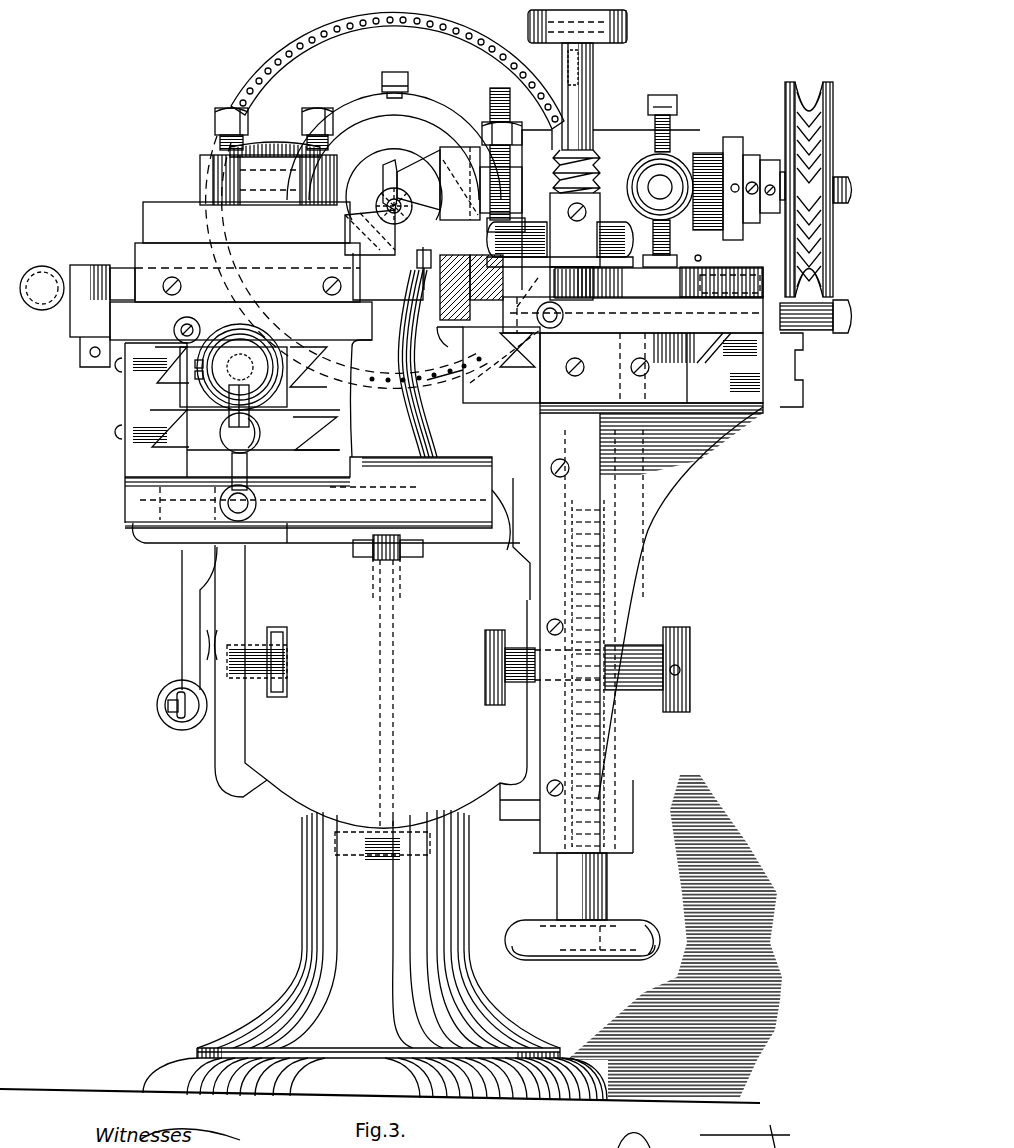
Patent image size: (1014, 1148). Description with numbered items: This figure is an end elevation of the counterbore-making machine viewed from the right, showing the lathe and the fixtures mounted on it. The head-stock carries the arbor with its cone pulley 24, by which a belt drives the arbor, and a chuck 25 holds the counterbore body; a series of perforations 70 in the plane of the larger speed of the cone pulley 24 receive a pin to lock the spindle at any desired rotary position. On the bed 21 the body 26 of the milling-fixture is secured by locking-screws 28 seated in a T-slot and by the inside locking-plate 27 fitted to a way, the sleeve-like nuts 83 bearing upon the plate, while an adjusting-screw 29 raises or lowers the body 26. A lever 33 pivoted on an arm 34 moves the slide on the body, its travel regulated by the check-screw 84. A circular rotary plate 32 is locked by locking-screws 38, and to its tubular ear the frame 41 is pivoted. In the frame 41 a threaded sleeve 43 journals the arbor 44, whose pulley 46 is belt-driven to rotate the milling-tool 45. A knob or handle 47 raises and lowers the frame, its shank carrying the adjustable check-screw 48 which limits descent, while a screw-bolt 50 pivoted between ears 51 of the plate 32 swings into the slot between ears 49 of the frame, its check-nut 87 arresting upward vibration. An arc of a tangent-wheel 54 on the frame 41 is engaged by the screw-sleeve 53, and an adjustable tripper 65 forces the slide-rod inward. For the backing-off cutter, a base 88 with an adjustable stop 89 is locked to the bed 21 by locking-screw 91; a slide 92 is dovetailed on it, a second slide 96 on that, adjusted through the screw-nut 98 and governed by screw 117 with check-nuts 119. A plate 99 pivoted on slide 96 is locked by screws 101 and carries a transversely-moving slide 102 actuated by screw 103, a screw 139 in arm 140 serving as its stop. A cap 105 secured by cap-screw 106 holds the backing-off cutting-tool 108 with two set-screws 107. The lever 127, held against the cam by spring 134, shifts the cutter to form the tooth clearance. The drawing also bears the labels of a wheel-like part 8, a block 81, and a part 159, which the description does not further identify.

The hand wheel 8 is at (234, 367).
The bed 21 is at (377, 686).
The cone pulley 24 is at (397, 70).
The chuck 25 is at (406, 206).
The body of the milling-fixture 26 is at (513, 478).
The inside locking-plate 27 is at (516, 539).
The locking-screws 28 is at (585, 669).
The adjusting-screw 29 is at (582, 906).
The circular rotary plate 32 is at (659, 283).
The lever 33 is at (525, 202).
The arm 34 is at (651, 368).
The locking-screws 38 is at (601, 277).
The frame 41 is at (611, 210).
The sleeve 43 is at (739, 186).
The arbor 44 is at (629, 187).
The milling-tool 45 is at (378, 185).
The pulley 46 is at (809, 188).
The knob or handle 47 is at (660, 210).
The adjustable check-screw 48 is at (676, 123).
The ears 49 is at (515, 190).
The screw-bolt 50 is at (498, 154).
The ears 51 is at (560, 244).
The screw-sleeve 53 is at (577, 80).
The arc of a tangent-wheel 54 is at (588, 207).
The adjustable tripper 65 is at (816, 353).
The series of perforations 70 is at (347, 196).
The bracket 81 is at (488, 365).
The sleeve-like nuts 83 is at (650, 692).
The check-screw 84 is at (551, 327).
The adjustable screw check-nut 87 is at (488, 124).
The base 88 is at (118, 507).
The adjustable stop 89 is at (133, 535).
The locking-screw 91 is at (388, 682).
The slide 92 is at (260, 398).
The second slide 96 is at (152, 422).
The screw-nut 98 is at (182, 565).
The plate 99 is at (241, 321).
The screws 101 is at (79, 352).
The transversely-moving slide 102 is at (247, 272).
The screw 103 is at (66, 270).
The cap 105 is at (268, 180).
The cap-screw 106 is at (275, 139).
The set-screws 107 is at (215, 122).
The backing-off cutting-tool 108 is at (250, 237).
The screw 117 is at (228, 328).
The check-nuts 119 is at (178, 326).
The lever 127 is at (182, 645).
The spring 134 is at (165, 705).
The screw 139 is at (435, 260).
The arm 140 is at (384, 255).
The spring 159 is at (571, 272).